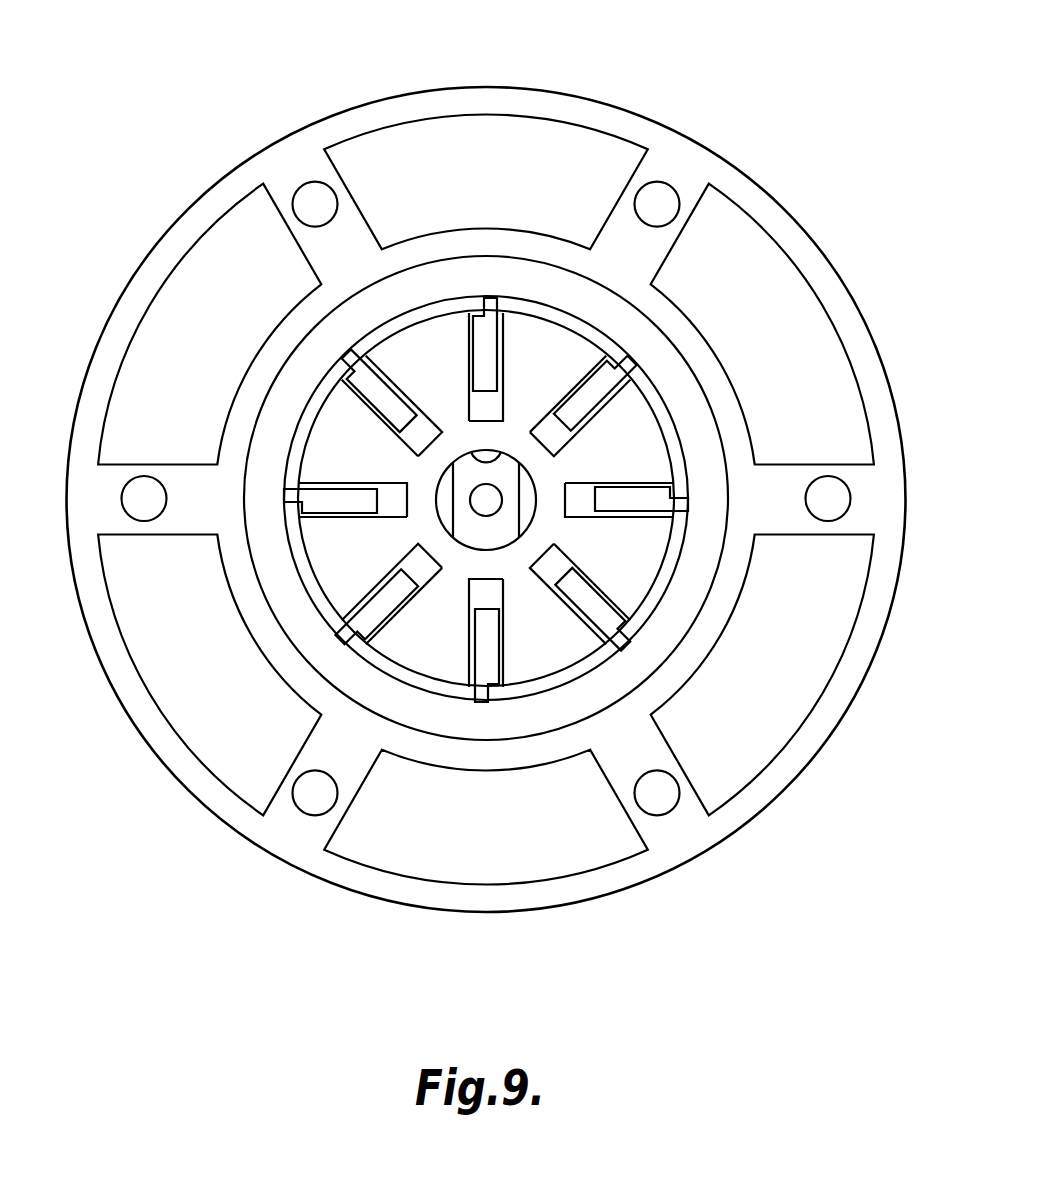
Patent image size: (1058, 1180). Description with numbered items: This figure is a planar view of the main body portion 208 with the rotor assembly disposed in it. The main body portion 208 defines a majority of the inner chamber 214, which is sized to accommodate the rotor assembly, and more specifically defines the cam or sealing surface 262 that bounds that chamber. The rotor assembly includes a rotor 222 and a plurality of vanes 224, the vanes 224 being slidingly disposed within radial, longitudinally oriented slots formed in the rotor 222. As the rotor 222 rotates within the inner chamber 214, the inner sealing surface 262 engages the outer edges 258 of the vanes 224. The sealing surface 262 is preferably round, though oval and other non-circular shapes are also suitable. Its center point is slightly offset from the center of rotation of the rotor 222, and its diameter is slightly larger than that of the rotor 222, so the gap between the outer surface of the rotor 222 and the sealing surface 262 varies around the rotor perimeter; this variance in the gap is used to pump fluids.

The main body portion 208 is at (618, 100).
The sealing surface 262 is at (392, 322).
The inner chamber 214 is at (352, 335).
The vanes 224 is at (372, 387).
The rotor 222 is at (327, 555).
The outer edges 258 is at (480, 690).